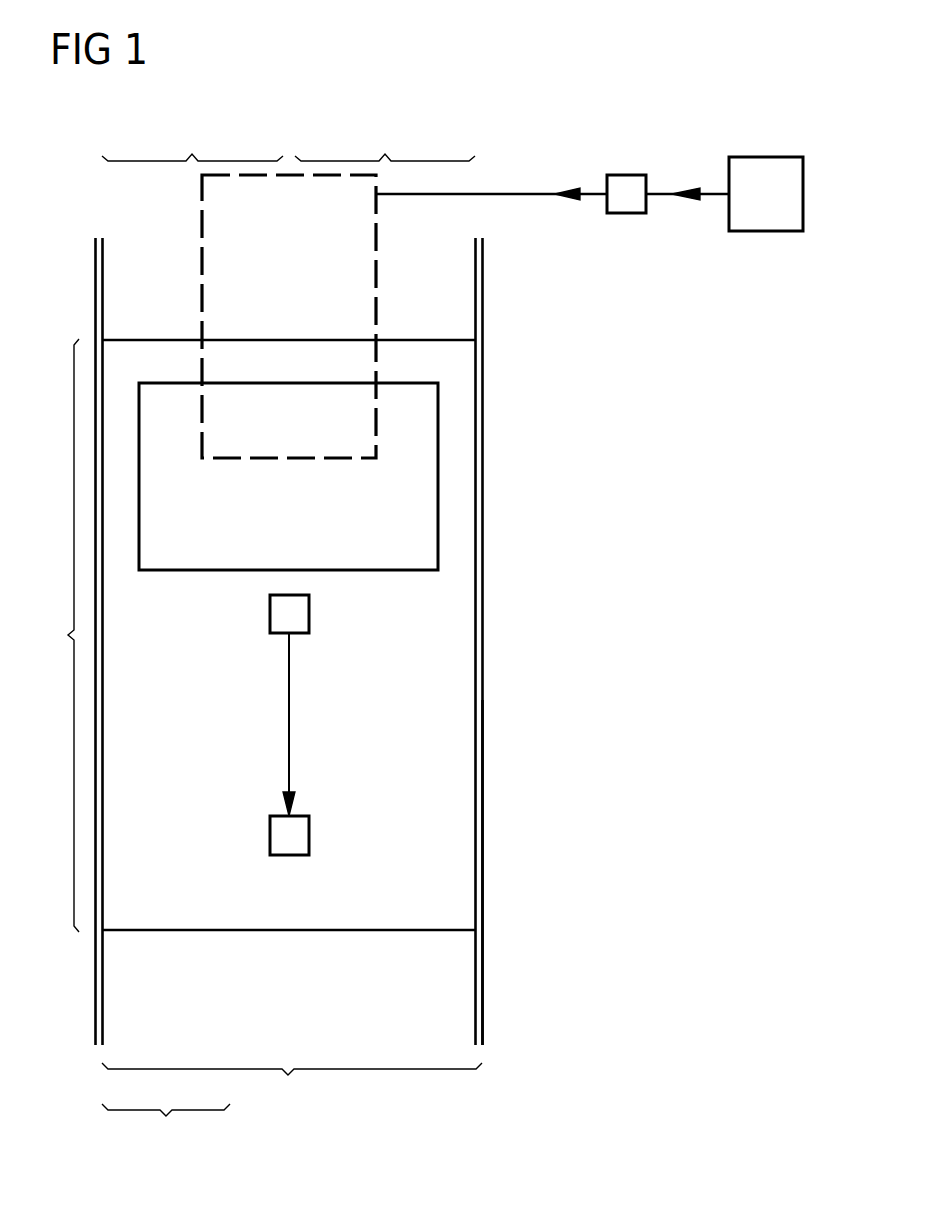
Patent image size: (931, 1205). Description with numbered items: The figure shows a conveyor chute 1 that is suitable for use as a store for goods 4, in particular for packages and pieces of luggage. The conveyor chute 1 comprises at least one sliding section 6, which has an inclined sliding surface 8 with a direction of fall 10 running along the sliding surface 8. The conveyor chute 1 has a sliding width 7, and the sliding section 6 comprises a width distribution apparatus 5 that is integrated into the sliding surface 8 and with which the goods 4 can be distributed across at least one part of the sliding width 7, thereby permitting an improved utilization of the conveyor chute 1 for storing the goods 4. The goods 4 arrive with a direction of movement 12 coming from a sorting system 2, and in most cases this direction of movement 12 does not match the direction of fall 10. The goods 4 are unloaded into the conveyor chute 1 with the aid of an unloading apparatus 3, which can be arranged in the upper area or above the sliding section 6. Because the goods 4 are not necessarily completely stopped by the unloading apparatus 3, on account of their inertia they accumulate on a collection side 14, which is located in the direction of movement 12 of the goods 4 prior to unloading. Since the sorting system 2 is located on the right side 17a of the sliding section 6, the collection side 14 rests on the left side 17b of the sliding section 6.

The conveyor chute 1 is at (94, 283).
The sorting system 2 is at (767, 156).
The unloading apparatus 3 is at (378, 262).
The goods 4 is at (626, 173).
The width distribution apparatus 5 is at (206, 572).
The sliding section 6 is at (63, 635).
The sliding width 7 is at (292, 1090).
The sliding surface 8 is at (440, 857).
The direction of fall 10 is at (290, 727).
The direction of movement 12 is at (521, 191).
The collection side 14 is at (166, 1132).
The right side 17a is at (385, 138).
The left side 17b is at (192, 138).